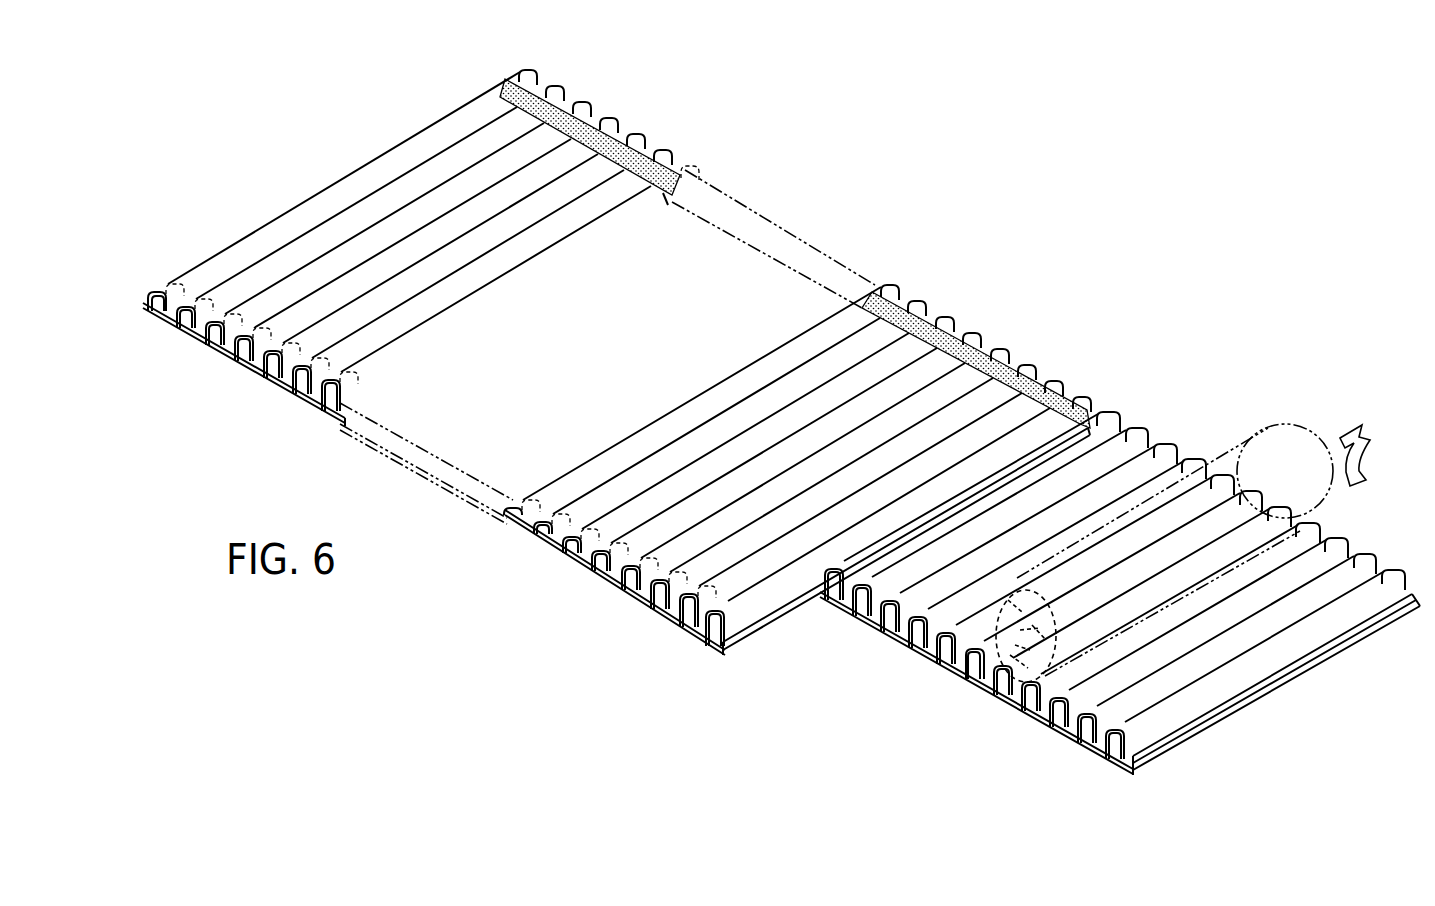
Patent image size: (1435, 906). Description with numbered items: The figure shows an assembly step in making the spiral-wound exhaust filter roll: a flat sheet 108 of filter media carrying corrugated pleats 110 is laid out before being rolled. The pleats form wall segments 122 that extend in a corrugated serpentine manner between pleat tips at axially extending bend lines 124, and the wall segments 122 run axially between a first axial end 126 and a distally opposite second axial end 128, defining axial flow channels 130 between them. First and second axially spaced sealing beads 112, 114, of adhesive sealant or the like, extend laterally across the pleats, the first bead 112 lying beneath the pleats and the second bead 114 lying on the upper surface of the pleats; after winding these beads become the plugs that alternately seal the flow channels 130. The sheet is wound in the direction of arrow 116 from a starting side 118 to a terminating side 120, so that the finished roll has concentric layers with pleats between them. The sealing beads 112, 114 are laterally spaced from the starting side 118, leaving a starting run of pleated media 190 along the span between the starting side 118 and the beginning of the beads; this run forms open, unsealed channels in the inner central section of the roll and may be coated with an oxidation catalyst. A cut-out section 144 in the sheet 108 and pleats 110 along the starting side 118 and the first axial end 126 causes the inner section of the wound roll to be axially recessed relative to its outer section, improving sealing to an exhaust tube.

The sheet 108 is at (602, 582).
The corrugated pleats 110 is at (688, 420).
The first sealing bead 112 is at (240, 368).
The second sealing bead 114 is at (598, 122).
The winding arrow 116 is at (1378, 458).
The starting side 118 is at (1274, 688).
The terminating side 120 is at (143, 304).
The wall segments 122 is at (576, 558).
The bend lines 124 is at (742, 404).
The first axial end 126 is at (203, 338).
The second axial end 128 is at (560, 102).
The axial flow channels 130 is at (292, 394).
The cut-out section 144 is at (943, 668).
The starting run of pleated media 190 is at (1157, 456).